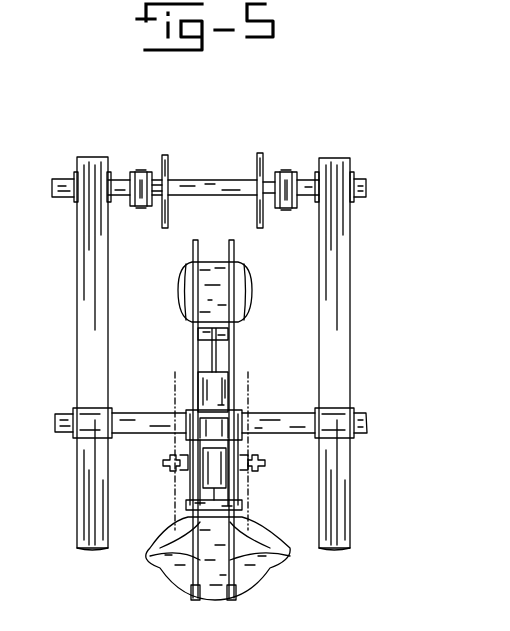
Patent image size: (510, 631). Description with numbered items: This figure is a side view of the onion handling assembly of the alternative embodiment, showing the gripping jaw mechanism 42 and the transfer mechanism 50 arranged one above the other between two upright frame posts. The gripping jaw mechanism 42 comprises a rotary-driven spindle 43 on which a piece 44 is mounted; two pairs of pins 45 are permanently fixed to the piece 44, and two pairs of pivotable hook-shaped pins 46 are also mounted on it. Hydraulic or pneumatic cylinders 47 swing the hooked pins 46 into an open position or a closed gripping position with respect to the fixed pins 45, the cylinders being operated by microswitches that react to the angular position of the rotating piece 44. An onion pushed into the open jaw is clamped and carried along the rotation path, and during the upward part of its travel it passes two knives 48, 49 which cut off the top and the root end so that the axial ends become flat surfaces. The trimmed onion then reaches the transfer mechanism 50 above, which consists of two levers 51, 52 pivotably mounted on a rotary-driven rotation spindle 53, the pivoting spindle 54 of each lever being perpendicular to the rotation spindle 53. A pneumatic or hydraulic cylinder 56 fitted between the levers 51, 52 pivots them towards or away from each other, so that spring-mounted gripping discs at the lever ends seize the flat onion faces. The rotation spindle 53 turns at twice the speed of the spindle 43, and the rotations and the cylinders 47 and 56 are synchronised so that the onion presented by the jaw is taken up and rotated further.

The gripping jaw mechanism 42 is at (270, 375).
The spindle 43 is at (360, 422).
The piece 44 is at (238, 418).
The pins 45 is at (225, 262).
The hooked-shaped pins 46 is at (234, 600).
The hydraulic or pneumatic cylinders 47 is at (208, 375).
The knife 48 is at (174, 515).
The knife 49 is at (250, 515).
The transfer mechanism 50 is at (290, 141).
The lever 51 is at (142, 172).
The lever 52 is at (288, 209).
The rotation spindle 53 is at (364, 184).
The pivoting spindle 54 is at (288, 172).
The pneumatic or hydraulic cylinder 56 is at (221, 183).